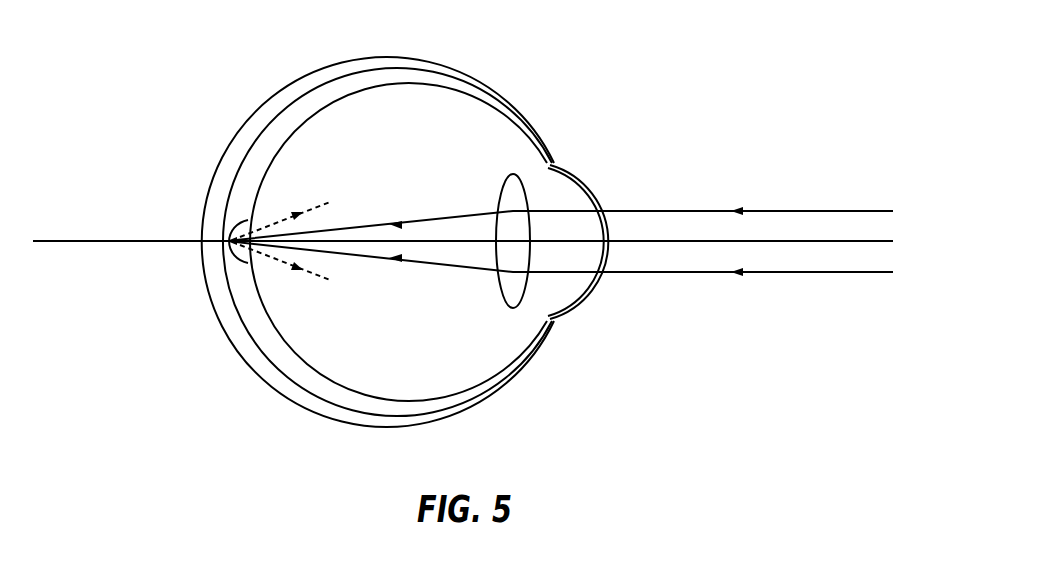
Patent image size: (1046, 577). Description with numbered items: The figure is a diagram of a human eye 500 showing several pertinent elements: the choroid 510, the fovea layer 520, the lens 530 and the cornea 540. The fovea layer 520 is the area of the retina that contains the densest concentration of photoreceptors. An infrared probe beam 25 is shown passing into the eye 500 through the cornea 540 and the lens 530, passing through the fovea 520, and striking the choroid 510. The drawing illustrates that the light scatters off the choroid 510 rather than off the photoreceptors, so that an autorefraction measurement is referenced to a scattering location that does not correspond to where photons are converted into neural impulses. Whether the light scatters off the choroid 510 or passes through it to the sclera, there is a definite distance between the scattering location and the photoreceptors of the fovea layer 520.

The human eye 500 is at (463, 237).
The choroid 510 is at (214, 249).
The fovea layer 520 is at (244, 276).
The lens 530 is at (507, 338).
The cornea 540 is at (590, 320).
The infrared probe beam 25 is at (725, 293).